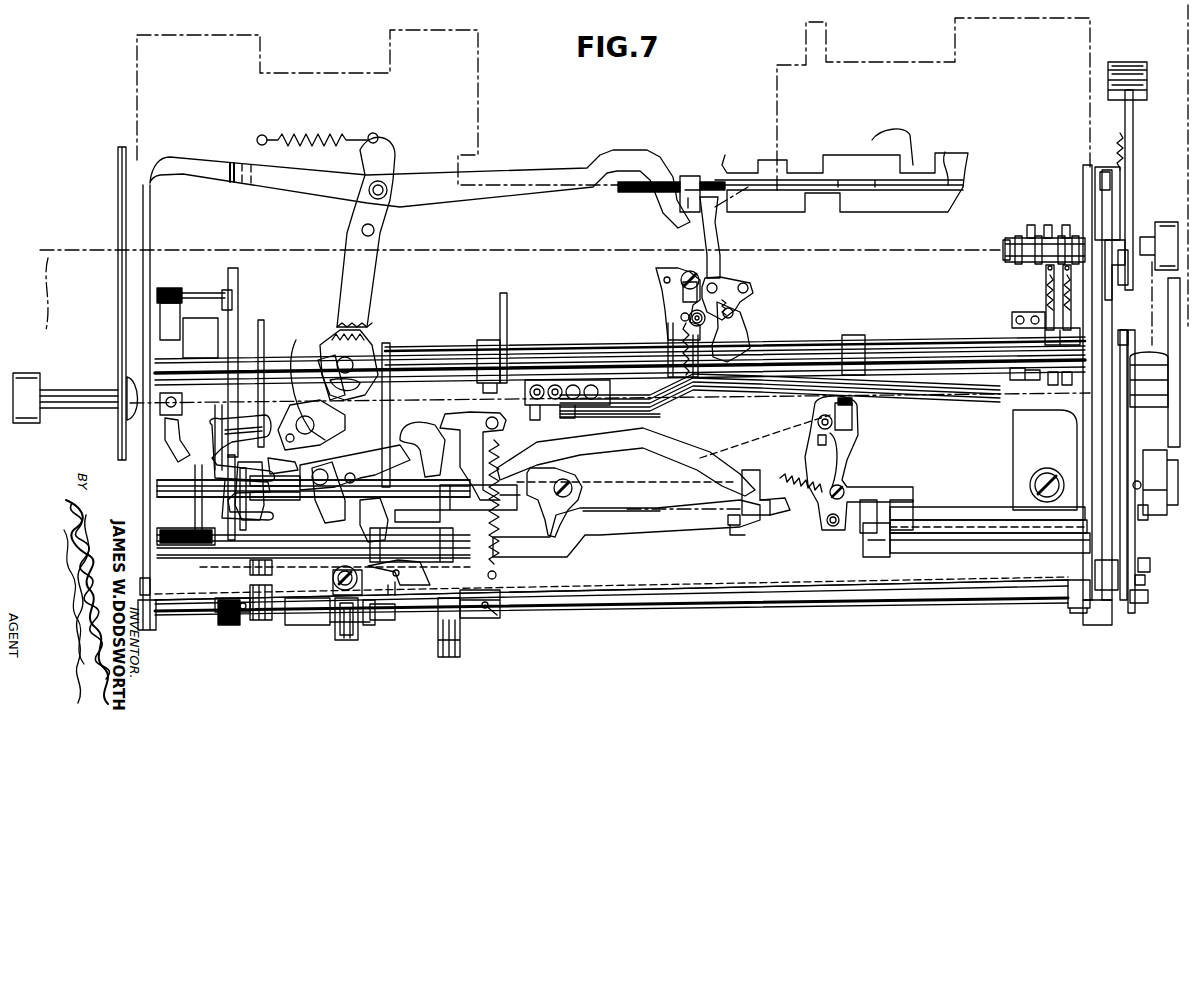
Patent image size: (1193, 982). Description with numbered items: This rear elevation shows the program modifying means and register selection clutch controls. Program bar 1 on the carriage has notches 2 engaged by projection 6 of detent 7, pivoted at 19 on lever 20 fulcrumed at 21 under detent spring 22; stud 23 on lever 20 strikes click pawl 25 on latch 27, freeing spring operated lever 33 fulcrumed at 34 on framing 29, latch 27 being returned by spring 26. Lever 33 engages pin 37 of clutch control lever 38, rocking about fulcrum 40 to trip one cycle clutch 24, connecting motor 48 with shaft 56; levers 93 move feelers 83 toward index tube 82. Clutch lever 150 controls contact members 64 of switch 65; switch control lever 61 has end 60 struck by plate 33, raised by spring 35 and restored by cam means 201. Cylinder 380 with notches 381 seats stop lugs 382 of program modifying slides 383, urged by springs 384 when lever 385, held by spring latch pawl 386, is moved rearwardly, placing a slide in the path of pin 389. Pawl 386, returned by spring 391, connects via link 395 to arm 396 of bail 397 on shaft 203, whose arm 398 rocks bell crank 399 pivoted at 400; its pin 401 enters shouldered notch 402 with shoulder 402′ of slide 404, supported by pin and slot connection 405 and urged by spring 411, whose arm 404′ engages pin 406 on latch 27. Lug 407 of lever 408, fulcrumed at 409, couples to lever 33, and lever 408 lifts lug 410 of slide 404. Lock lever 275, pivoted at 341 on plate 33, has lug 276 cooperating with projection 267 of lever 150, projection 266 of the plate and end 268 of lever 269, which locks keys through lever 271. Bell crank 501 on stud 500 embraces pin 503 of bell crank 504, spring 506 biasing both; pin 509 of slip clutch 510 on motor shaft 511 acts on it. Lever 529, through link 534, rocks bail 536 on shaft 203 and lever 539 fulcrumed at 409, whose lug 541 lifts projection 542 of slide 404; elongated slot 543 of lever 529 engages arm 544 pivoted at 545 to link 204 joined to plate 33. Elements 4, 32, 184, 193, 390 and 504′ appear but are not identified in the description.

The tabulating program bar 1 is at (948, 172).
The notches 2 is at (815, 172).
The knob 4 is at (600, 322).
The projection 6 is at (690, 185).
The detent lever 7 is at (548, 178).
The pivot 19 is at (385, 183).
The lever 20 is at (372, 272).
The fulcrum 21 is at (375, 230).
The detent spring 22 is at (324, 140).
The stud 23 is at (390, 388).
The register selection clutch 24 is at (450, 645).
The click pawl 25 is at (362, 345).
The spring 26 is at (235, 473).
The latch 27 is at (322, 360).
The framing 29 is at (288, 375).
The link 32 is at (283, 472).
The clutch control plate 33 is at (355, 464).
The fulcrum 34 is at (311, 425).
The spring 35 is at (500, 530).
The pin 37 is at (365, 524).
The clutch control lever 38 is at (411, 533).
The fulcrum 40 is at (400, 578).
The motor 48 is at (990, 462).
The shaft 56 is at (700, 608).
The end 60 is at (225, 350).
The switch control lever 61 is at (226, 287).
The contact members 64 is at (168, 285).
The switch 65 is at (182, 328).
The index tube 82 is at (124, 458).
The feelers 83 is at (556, 378).
The levers 93 is at (1060, 385).
The clutch lever 150 is at (236, 276).
The link 184 is at (712, 238).
The hatched bar 193 is at (672, 183).
The cam means 201 is at (490, 612).
The transverse shaft 203 is at (979, 554).
The link 204 is at (325, 525).
The projection 266 is at (248, 508).
The projection 267 is at (218, 504).
The end 268 is at (272, 591).
The lever 269 is at (222, 420).
The lever 271 is at (417, 507).
The lock lever 275 is at (268, 518).
The lug 276 is at (215, 486).
The pivot 341 is at (348, 485).
The cylinder 380 is at (1010, 232).
The notches 381 is at (1030, 230).
The stop lugs 382 is at (1062, 228).
The program modifying slides 383 is at (1048, 322).
The springs 384 is at (1045, 280).
The vertical total lever 385 is at (1128, 110).
The spring latch pawl 386 is at (1105, 178).
The pin 389 is at (1012, 380).
The shaft 390 is at (1005, 252).
The spring 391 is at (1112, 140).
The link 395 is at (1133, 333).
The arm 396 is at (1078, 536).
The bail member 397 is at (967, 515).
The arm 398 is at (898, 537).
The bell crank lever 399 is at (862, 460).
The pivot 400 is at (840, 540).
The pin 401 is at (862, 440).
The shouldered notch 402 is at (862, 425).
The shoulder 402′ is at (862, 412).
The slide 404 is at (648, 448).
The arm 404′ is at (330, 358).
The pin and slot connection 405 is at (435, 425).
The pin 406 is at (305, 380).
The lug 407 is at (430, 449).
The lever 408 is at (640, 478).
The fulcrum 409 is at (584, 497).
The lug 410 is at (775, 505).
The spring 411 is at (777, 524).
The stud 500 is at (1146, 560).
The bell crank lever 501 is at (1133, 607).
The pin 503 is at (1143, 596).
The bell crank lever 504 is at (1082, 432).
The plate 504′ is at (1128, 303).
The spring 506 is at (1143, 580).
The pin 509 is at (1145, 512).
The centrifugal slip clutch 510 is at (1155, 465).
The motor shaft 511 is at (1133, 510).
The lever 529 is at (352, 632).
The link 534 is at (381, 612).
The bail 536 is at (450, 540).
The lever 539 is at (590, 548).
The lug 541 is at (736, 530).
The projection 542 is at (730, 522).
The elongated slot 543 is at (356, 628).
The arm 544 is at (340, 606).
The pivot 545 is at (330, 575).